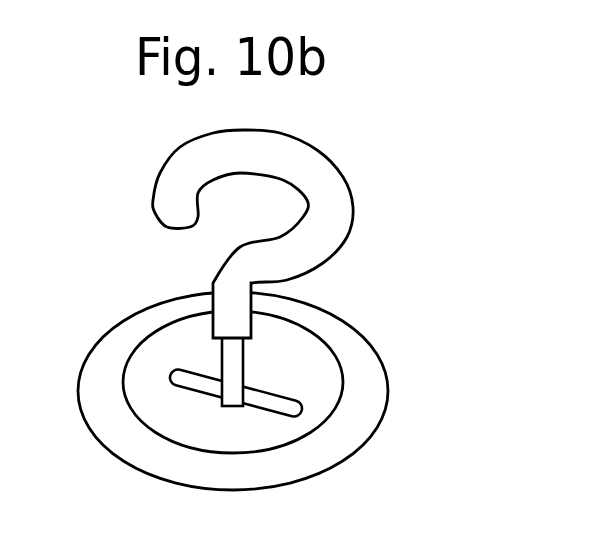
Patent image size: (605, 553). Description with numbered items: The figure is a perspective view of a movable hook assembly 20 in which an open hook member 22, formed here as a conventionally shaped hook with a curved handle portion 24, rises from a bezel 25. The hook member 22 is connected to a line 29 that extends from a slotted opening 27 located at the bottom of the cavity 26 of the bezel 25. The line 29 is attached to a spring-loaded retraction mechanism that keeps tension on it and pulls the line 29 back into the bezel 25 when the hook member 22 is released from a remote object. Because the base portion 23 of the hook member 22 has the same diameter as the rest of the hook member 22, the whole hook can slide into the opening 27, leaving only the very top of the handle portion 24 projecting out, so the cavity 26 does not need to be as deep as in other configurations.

The movable hook assembly 20 is at (122, 135).
The open hook member 22 is at (291, 213).
The base portion 23 is at (242, 318).
The handle portion 24 is at (278, 213).
The bezel 25 is at (97, 432).
The cavity 26 is at (174, 423).
The opening 27 is at (297, 400).
The line 29 is at (232, 362).